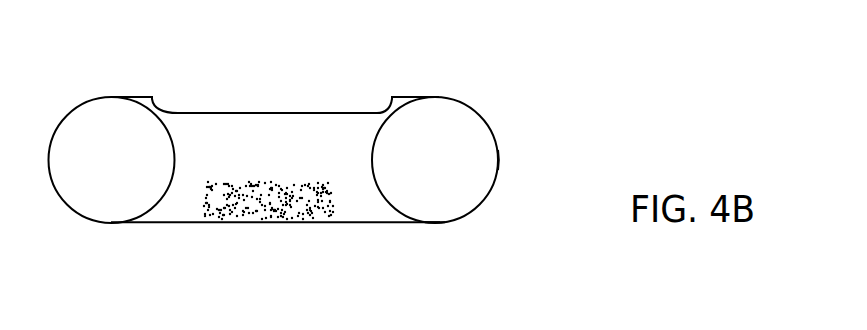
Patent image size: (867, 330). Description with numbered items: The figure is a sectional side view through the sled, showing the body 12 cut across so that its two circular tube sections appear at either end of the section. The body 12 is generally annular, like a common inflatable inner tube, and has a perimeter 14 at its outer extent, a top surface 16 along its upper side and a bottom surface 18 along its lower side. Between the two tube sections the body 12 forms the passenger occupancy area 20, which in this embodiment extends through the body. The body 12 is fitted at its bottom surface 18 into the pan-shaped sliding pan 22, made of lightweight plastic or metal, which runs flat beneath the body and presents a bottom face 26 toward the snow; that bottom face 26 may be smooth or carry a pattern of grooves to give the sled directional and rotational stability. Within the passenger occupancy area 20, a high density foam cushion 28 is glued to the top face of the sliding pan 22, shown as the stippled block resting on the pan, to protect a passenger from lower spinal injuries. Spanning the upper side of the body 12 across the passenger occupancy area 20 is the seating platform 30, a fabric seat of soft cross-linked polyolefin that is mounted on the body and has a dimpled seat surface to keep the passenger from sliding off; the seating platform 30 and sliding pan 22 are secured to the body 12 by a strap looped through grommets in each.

The body 12 is at (473, 108).
The perimeter 14 is at (497, 162).
The top surface 16 is at (439, 98).
The bottom surface 18 is at (440, 221).
The passenger occupancy area 20 is at (256, 135).
The sliding pan 22 is at (158, 222).
The bottom face 26 is at (197, 223).
The high density foam cushion 28 is at (318, 212).
The seating platform 30 is at (230, 113).